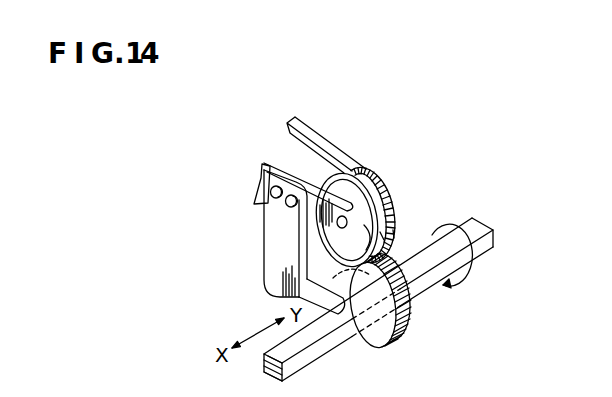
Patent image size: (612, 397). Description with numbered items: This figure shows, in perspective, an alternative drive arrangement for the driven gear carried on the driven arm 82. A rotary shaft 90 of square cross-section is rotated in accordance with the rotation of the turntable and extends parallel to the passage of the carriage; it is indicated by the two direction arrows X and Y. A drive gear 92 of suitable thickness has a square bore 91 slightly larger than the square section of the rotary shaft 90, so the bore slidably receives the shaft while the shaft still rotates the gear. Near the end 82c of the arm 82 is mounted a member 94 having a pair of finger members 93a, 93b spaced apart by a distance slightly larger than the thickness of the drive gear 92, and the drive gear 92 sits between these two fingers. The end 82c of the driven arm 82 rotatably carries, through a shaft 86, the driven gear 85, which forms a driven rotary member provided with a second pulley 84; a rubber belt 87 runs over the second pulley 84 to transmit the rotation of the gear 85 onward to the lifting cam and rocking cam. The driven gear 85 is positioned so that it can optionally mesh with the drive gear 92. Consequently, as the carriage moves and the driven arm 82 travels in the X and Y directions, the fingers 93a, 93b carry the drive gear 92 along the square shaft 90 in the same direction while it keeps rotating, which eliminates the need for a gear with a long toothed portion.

The driven arm 82 is at (258, 196).
The end of the driven arm 82c is at (345, 220).
The second pulley 84 is at (380, 232).
The driven gear 85 is at (386, 239).
The shaft 86 is at (388, 195).
The rubber belt 87 is at (339, 155).
The rotary shaft 90 is at (322, 357).
The square bore 91 is at (369, 341).
The drive gear 92 is at (372, 343).
The finger member 93a is at (298, 300).
The finger member 93b is at (299, 261).
The member 94 is at (267, 232).